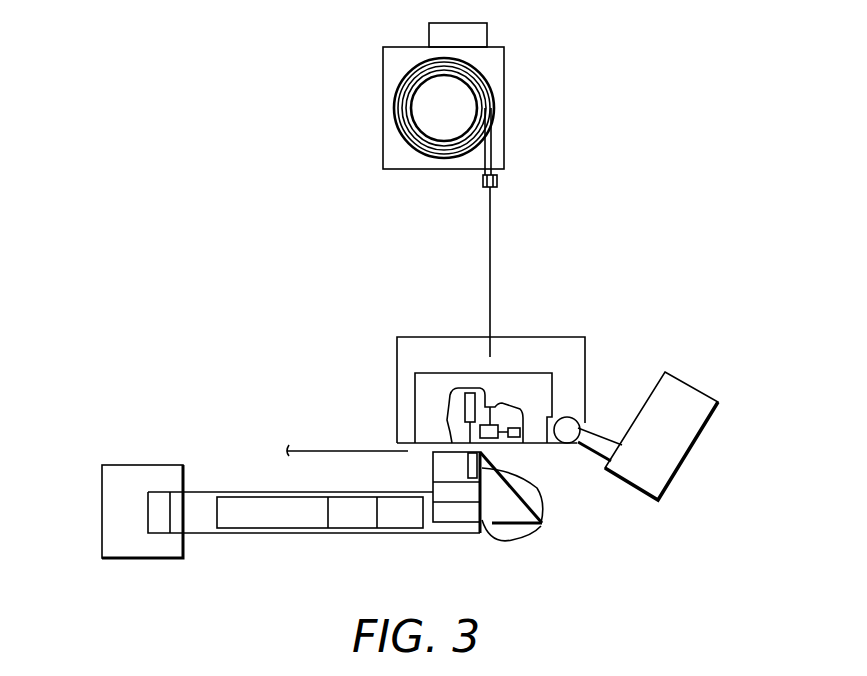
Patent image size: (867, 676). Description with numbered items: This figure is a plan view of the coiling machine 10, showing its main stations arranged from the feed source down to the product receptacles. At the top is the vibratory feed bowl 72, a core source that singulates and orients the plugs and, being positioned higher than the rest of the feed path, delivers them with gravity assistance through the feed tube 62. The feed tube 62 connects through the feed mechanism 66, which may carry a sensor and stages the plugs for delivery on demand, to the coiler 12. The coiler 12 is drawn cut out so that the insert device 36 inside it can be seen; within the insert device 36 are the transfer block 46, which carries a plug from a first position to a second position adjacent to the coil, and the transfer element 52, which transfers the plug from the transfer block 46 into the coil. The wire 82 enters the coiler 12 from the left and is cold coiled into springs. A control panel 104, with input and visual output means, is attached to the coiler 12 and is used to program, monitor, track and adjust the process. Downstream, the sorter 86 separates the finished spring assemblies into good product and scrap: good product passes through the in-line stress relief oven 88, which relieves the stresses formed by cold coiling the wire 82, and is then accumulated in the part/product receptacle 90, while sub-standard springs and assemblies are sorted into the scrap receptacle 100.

The coiling machine 10 is at (137, 154).
The coiler 12 is at (575, 355).
The insert device 36 is at (504, 366).
The transfer block 46 is at (493, 440).
The transfer element 52 is at (458, 411).
The feed tube 62 is at (490, 308).
The feed mechanism 66 is at (498, 180).
The vibratory feed bowl 72 is at (495, 62).
The wire 82 is at (320, 443).
The sorter 86 is at (483, 472).
The stress relief oven 88 is at (208, 533).
The part/product receptacle 90 is at (123, 558).
The scrap receptacle 100 is at (527, 538).
The control panel 104 is at (694, 377).